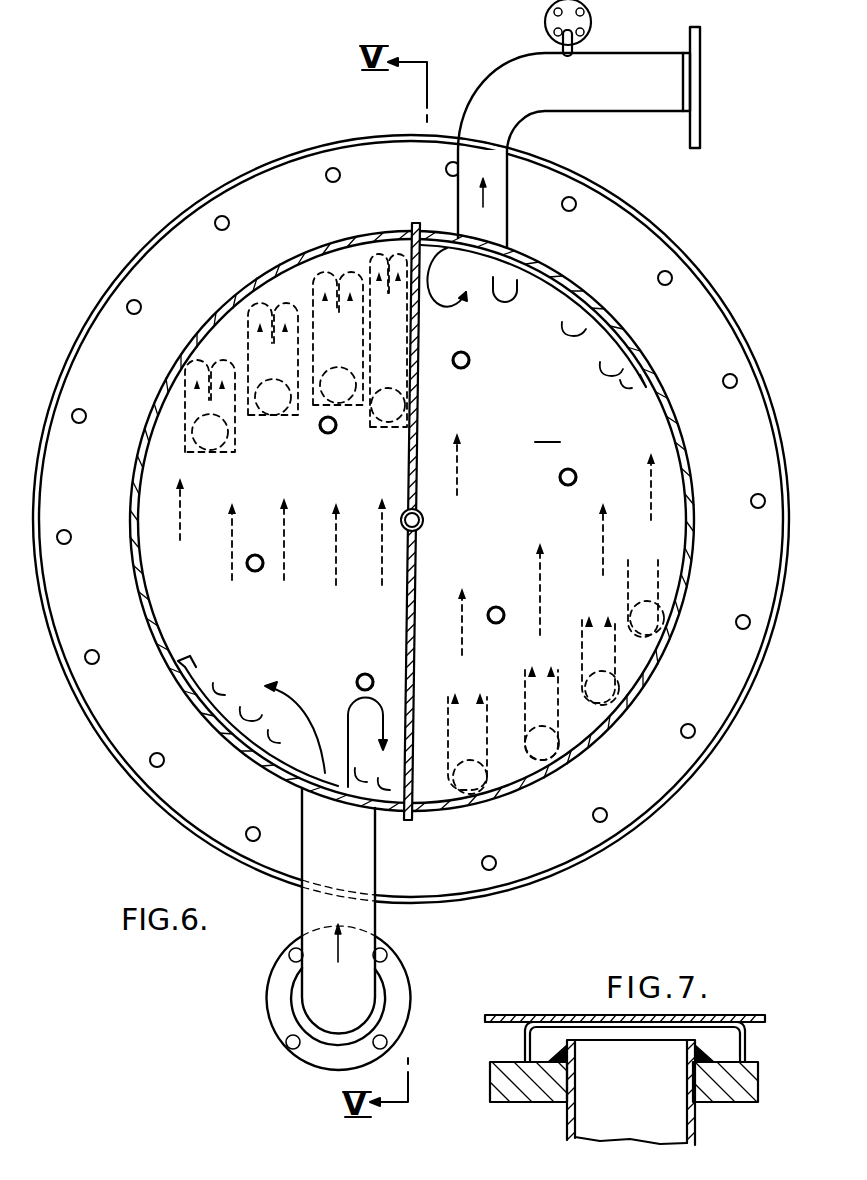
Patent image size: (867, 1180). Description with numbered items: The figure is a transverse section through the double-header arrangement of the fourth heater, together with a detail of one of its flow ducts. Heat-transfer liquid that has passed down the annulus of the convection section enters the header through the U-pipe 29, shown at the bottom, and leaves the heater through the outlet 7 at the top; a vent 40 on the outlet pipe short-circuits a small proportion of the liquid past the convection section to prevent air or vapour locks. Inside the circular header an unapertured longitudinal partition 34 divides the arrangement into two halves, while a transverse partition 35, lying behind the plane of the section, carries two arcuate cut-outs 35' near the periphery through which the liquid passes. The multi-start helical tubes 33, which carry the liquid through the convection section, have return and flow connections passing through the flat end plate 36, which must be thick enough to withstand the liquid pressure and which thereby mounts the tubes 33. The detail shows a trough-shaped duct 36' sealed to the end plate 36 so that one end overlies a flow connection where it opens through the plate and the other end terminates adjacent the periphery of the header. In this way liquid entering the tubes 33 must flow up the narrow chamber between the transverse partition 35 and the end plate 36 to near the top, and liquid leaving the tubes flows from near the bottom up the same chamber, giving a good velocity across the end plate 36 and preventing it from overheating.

In FIG. 6, the outlet 7 is at (521, 115).
In FIG. 6, the vent 40 is at (545, 22).
In FIG. 6, the U-pipe 29 is at (312, 999).
In FIG. 6, the longitudinal partition 34 is at (409, 620).
In FIG. 6, the arcuate cut-outs 35' is at (425, 517).
In FIG. 7, the transverse partition 35 is at (618, 996).
In FIG. 7, the trough-shaped ducts 36' is at (590, 1042).
In FIG. 7, the end plate 36 is at (619, 1092).
In FIG. 7, the multi-start helical tubes 33 is at (567, 1120).